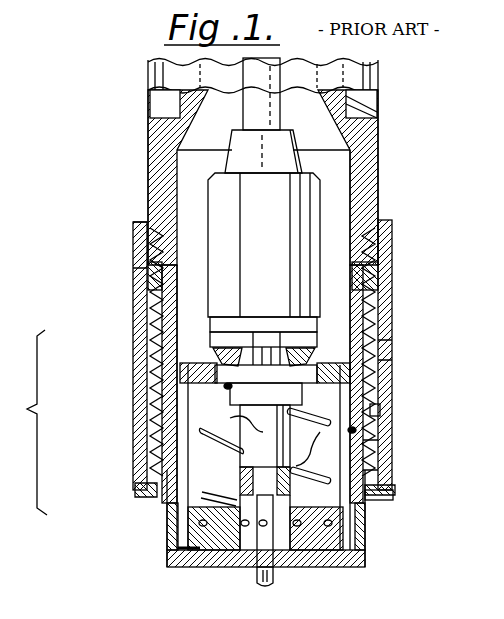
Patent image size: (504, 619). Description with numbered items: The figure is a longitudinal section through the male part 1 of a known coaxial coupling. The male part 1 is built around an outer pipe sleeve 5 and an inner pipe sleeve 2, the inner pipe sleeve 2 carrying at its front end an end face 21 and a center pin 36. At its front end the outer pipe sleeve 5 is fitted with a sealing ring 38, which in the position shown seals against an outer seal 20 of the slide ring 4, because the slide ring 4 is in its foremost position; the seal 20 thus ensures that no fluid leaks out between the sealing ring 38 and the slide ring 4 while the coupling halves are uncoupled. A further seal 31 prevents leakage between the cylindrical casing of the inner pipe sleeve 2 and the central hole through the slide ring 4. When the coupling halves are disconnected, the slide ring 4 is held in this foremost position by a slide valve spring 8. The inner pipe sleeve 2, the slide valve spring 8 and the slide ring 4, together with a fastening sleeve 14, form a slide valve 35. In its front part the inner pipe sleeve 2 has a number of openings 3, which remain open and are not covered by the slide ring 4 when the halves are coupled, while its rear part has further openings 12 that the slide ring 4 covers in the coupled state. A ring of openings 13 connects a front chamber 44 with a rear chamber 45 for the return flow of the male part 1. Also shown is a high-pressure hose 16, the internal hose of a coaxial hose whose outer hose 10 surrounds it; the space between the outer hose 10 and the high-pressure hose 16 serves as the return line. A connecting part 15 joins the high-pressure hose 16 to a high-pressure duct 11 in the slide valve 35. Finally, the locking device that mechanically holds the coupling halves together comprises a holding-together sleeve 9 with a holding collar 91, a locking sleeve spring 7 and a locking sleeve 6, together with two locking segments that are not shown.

The male part 1 is at (447, 133).
The inner pipe sleeve 2 is at (253, 452).
The openings 3 is at (267, 522).
The slide ring 4 is at (197, 548).
The outer pipe sleeve 5 is at (393, 457).
The locking sleeve 6 is at (393, 352).
The locking sleeve spring 7 is at (370, 410).
The slide valve spring 8 is at (230, 386).
The holding-together sleeve 9 is at (395, 273).
The outer hose 10 is at (160, 104).
The high-pressure duct 11 is at (312, 470).
The openings 12 is at (222, 410).
The openings 13 is at (393, 328).
The fastening sleeve 14 is at (147, 268).
The connecting part 15 is at (325, 186).
The high-pressure hose 16 is at (277, 105).
The outer seal 20 is at (193, 567).
The end face 21 is at (282, 565).
The seal 31 is at (208, 567).
The slide valve 35 is at (23, 422).
The center pin 36 is at (253, 573).
The sealing ring 38 is at (337, 567).
The front chamber 44 is at (340, 388).
The rear chamber 45 is at (358, 205).
The holding collar 91 is at (373, 500).